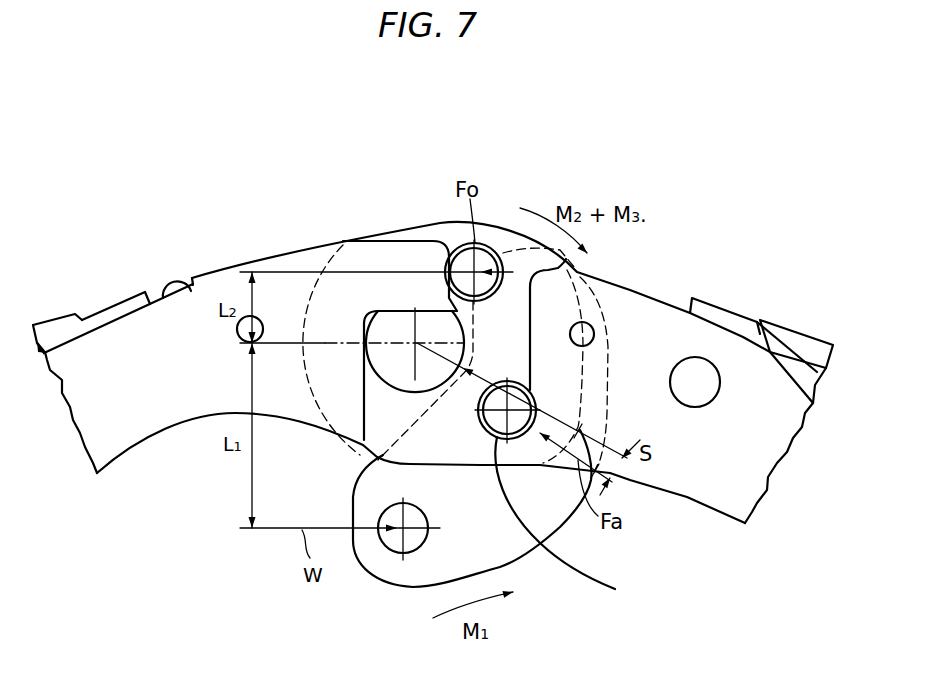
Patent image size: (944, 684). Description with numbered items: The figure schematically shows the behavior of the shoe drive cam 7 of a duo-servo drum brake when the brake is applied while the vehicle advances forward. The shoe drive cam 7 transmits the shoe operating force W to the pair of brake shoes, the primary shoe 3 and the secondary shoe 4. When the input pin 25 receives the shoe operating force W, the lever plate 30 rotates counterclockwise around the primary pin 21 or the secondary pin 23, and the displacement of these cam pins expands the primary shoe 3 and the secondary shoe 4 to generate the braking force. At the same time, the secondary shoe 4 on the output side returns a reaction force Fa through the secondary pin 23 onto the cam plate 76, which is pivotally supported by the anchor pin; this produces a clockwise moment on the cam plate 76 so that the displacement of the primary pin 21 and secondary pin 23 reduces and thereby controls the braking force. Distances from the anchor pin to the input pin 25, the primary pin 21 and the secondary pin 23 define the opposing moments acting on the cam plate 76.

The primary shoe 3 is at (132, 360).
The secondary shoe 4 is at (750, 373).
The shoe drive cam 7 is at (435, 203).
The primary pin 21 is at (493, 252).
The secondary pin 23 is at (548, 533).
The input pin 25 is at (415, 542).
The lever plate 30 is at (550, 513).
The cam plate 76 is at (412, 230).